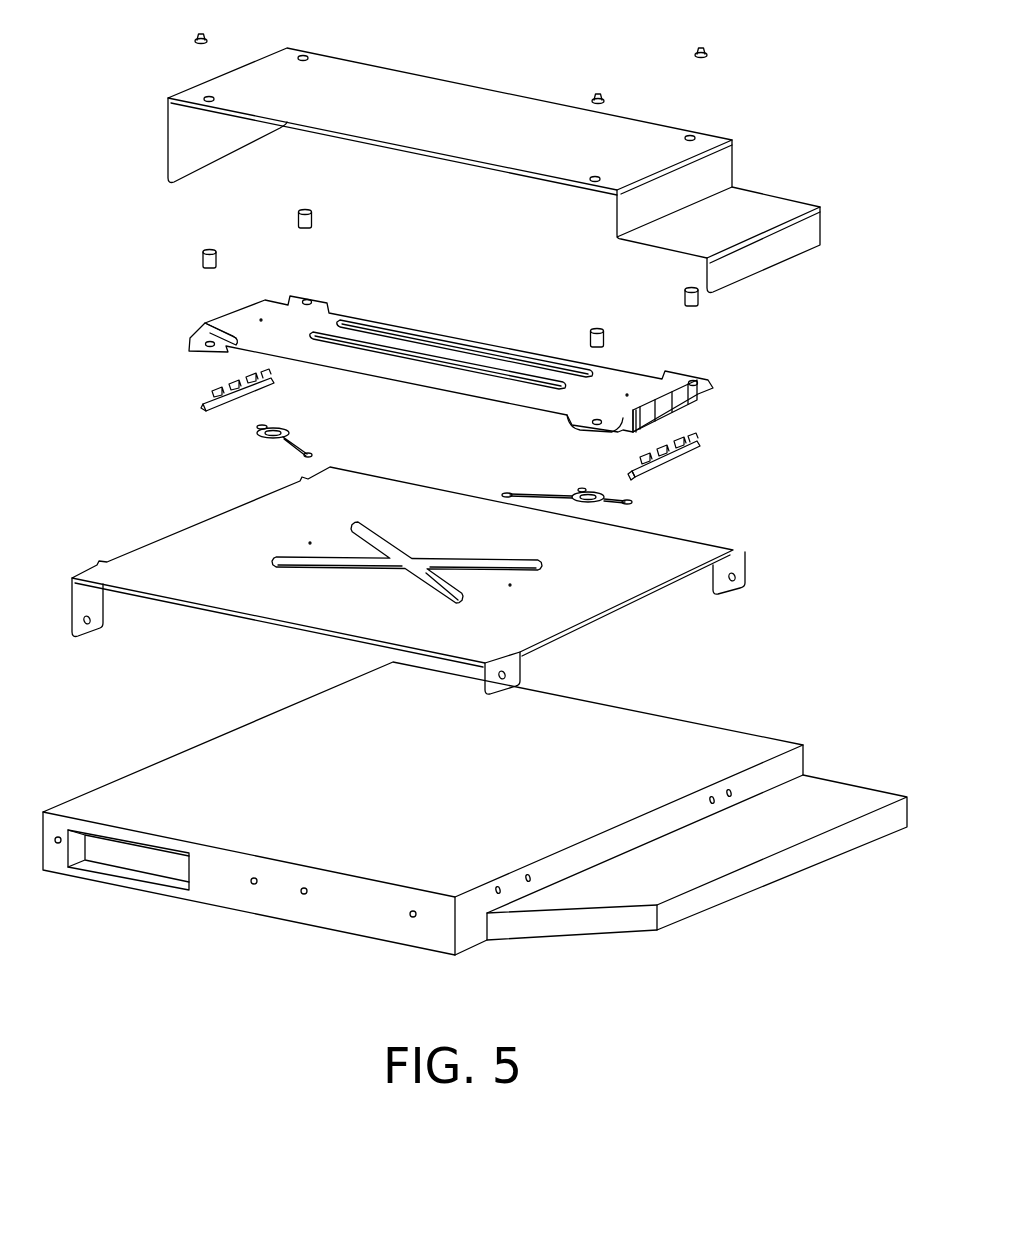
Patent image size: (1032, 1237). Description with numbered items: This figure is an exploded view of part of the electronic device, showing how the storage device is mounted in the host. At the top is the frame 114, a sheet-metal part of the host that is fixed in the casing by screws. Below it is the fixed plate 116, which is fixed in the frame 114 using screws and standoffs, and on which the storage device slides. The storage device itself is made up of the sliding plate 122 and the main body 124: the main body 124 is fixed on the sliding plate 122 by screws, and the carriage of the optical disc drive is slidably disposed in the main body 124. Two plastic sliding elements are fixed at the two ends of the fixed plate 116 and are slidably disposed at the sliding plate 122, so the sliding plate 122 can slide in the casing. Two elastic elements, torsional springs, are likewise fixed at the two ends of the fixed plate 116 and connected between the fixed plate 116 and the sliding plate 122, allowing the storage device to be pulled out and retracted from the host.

The frame 114 is at (757, 203).
The fixed plate 116 is at (648, 367).
The sliding plate 122 is at (695, 553).
The main body 124 is at (700, 740).